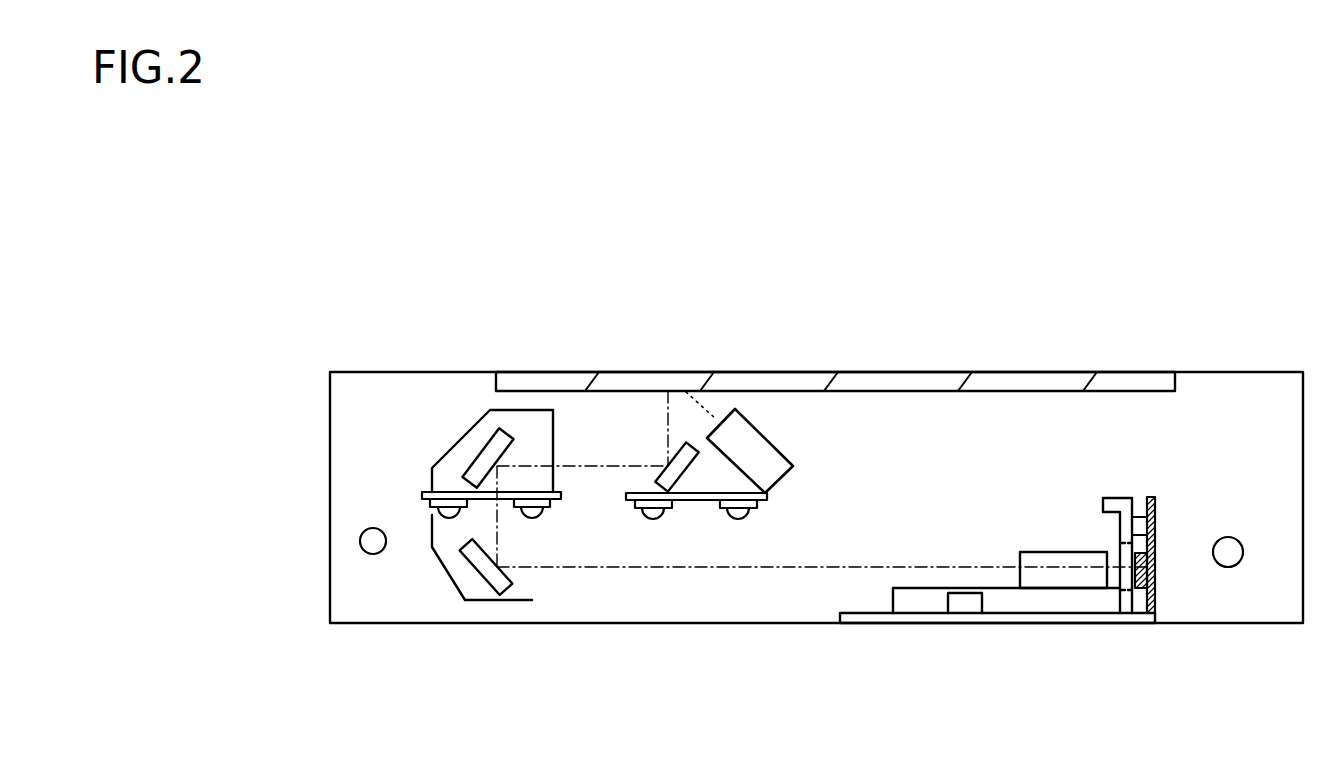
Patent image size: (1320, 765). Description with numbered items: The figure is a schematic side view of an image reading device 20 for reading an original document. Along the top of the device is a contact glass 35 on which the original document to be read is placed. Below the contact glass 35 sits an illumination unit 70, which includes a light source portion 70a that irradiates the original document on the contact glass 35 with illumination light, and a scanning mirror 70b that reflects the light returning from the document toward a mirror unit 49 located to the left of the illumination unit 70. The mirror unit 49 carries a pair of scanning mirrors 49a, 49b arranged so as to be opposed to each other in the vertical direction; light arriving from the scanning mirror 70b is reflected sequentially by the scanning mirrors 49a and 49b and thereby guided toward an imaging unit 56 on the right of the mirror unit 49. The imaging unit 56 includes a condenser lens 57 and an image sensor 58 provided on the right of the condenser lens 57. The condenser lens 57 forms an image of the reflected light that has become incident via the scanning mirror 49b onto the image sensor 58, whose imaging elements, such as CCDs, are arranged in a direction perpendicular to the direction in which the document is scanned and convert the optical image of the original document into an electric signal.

The image reading device 20 is at (327, 327).
The contact glass 35 is at (627, 388).
The mirror unit 49 is at (468, 420).
The scanning mirror 49a is at (473, 467).
The scanning mirror 49b is at (473, 553).
The illumination unit 70 is at (765, 432).
The light source portion 70a is at (793, 460).
The scanning mirror 70b is at (689, 478).
The imaging unit 56 is at (930, 626).
The condenser lens 57 is at (1025, 555).
The image sensor 58 is at (1141, 588).